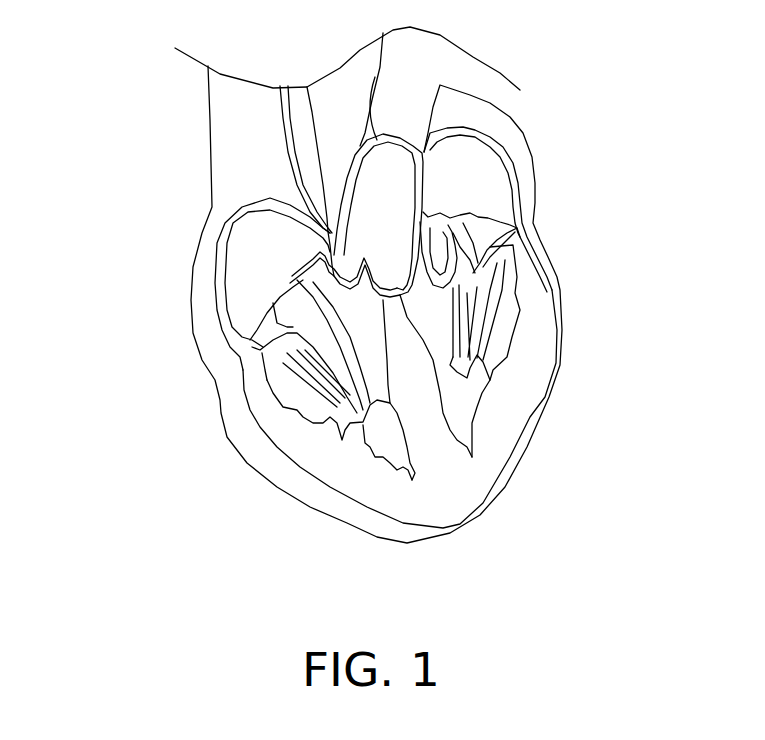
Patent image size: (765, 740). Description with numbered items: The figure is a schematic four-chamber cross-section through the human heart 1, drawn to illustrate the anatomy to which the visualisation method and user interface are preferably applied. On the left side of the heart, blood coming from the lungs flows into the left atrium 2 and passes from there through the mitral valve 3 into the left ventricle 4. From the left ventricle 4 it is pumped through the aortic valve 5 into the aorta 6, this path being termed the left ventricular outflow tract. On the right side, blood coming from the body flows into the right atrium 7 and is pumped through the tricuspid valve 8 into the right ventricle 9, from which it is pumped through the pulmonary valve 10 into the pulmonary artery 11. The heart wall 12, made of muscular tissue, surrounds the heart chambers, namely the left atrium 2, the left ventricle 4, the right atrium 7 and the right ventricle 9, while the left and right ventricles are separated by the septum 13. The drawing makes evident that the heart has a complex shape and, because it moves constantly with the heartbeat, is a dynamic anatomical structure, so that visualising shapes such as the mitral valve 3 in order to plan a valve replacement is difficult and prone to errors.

The human heart 1 is at (188, 543).
The left atrium 2 is at (460, 182).
The mitral valve 3 is at (493, 232).
The left ventricle 4 is at (482, 353).
The aortic valve 5 is at (440, 282).
The aorta 6 is at (328, 98).
The right atrium 7 is at (250, 253).
The tricuspid valve 8 is at (252, 340).
The right ventricle 9 is at (367, 420).
The pulmonary valve 10 is at (307, 88).
The pulmonary artery 11 is at (407, 100).
The heart wall 12 is at (503, 437).
The septum 13 is at (403, 347).